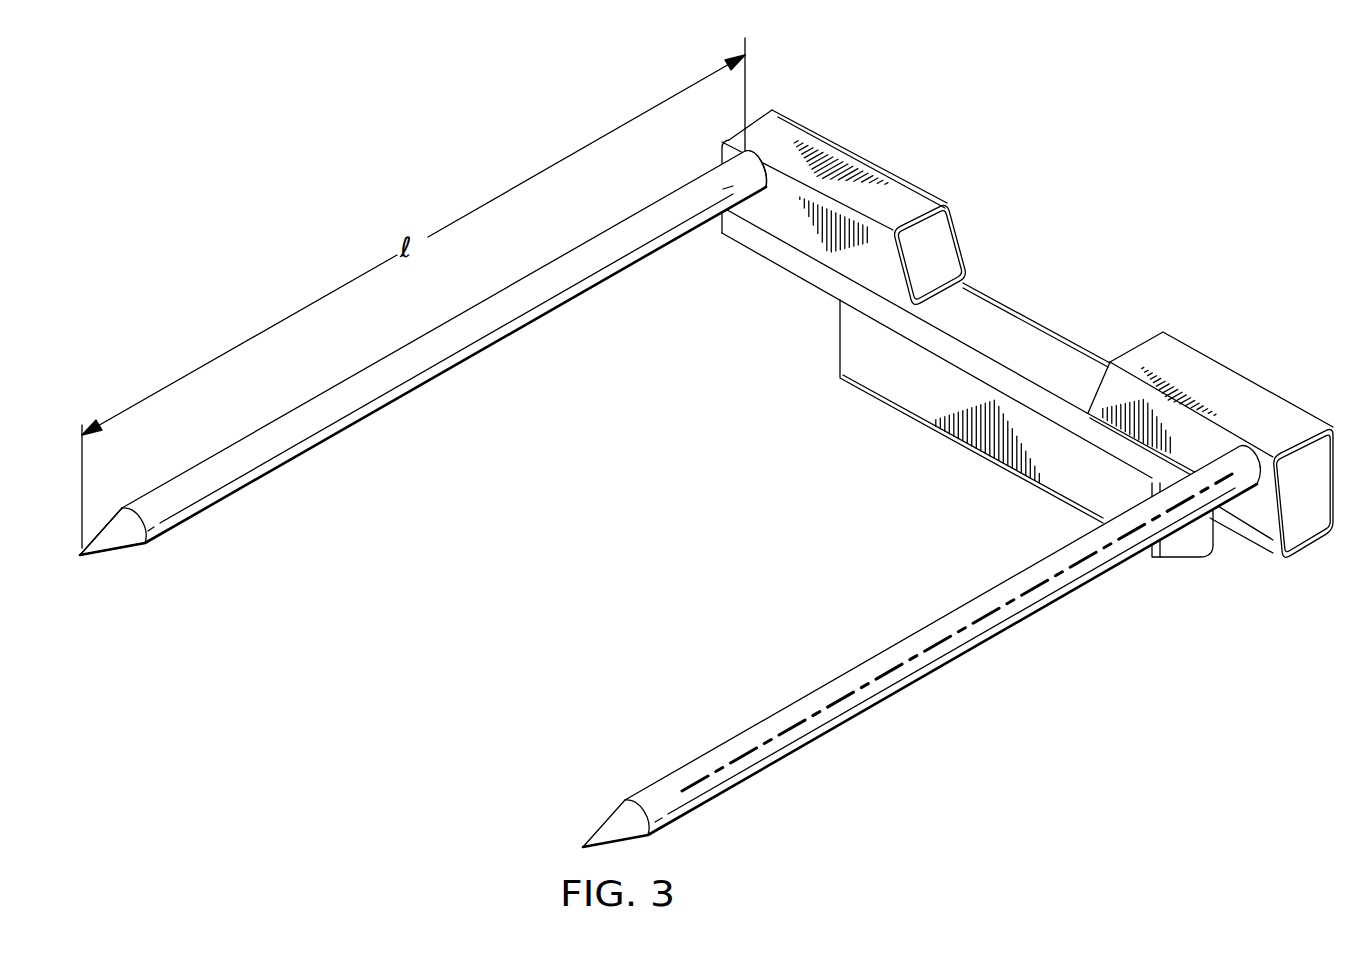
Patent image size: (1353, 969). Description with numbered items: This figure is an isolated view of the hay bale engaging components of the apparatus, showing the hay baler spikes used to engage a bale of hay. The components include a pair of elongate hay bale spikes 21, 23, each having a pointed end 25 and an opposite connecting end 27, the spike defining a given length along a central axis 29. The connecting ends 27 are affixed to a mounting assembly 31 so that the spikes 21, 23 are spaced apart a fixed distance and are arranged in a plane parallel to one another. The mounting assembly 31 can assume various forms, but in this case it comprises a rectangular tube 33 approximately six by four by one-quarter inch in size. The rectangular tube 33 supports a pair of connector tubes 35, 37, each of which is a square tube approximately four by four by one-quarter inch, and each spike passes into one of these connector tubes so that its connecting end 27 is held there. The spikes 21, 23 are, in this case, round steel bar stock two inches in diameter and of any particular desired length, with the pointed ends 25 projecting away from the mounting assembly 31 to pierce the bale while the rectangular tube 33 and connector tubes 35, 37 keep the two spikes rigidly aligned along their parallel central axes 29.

The hay bale spike 21 is at (459, 352).
The hay bale spike 23 is at (921, 646).
The pointed end 25 is at (81, 557).
The connecting end 27 is at (762, 182).
The central axis 29 is at (952, 630).
The mounting assembly 31 is at (1070, 277).
The rectangular tube 33 is at (907, 393).
The connector tube 35 is at (900, 197).
The connector tube 37 is at (1253, 397).